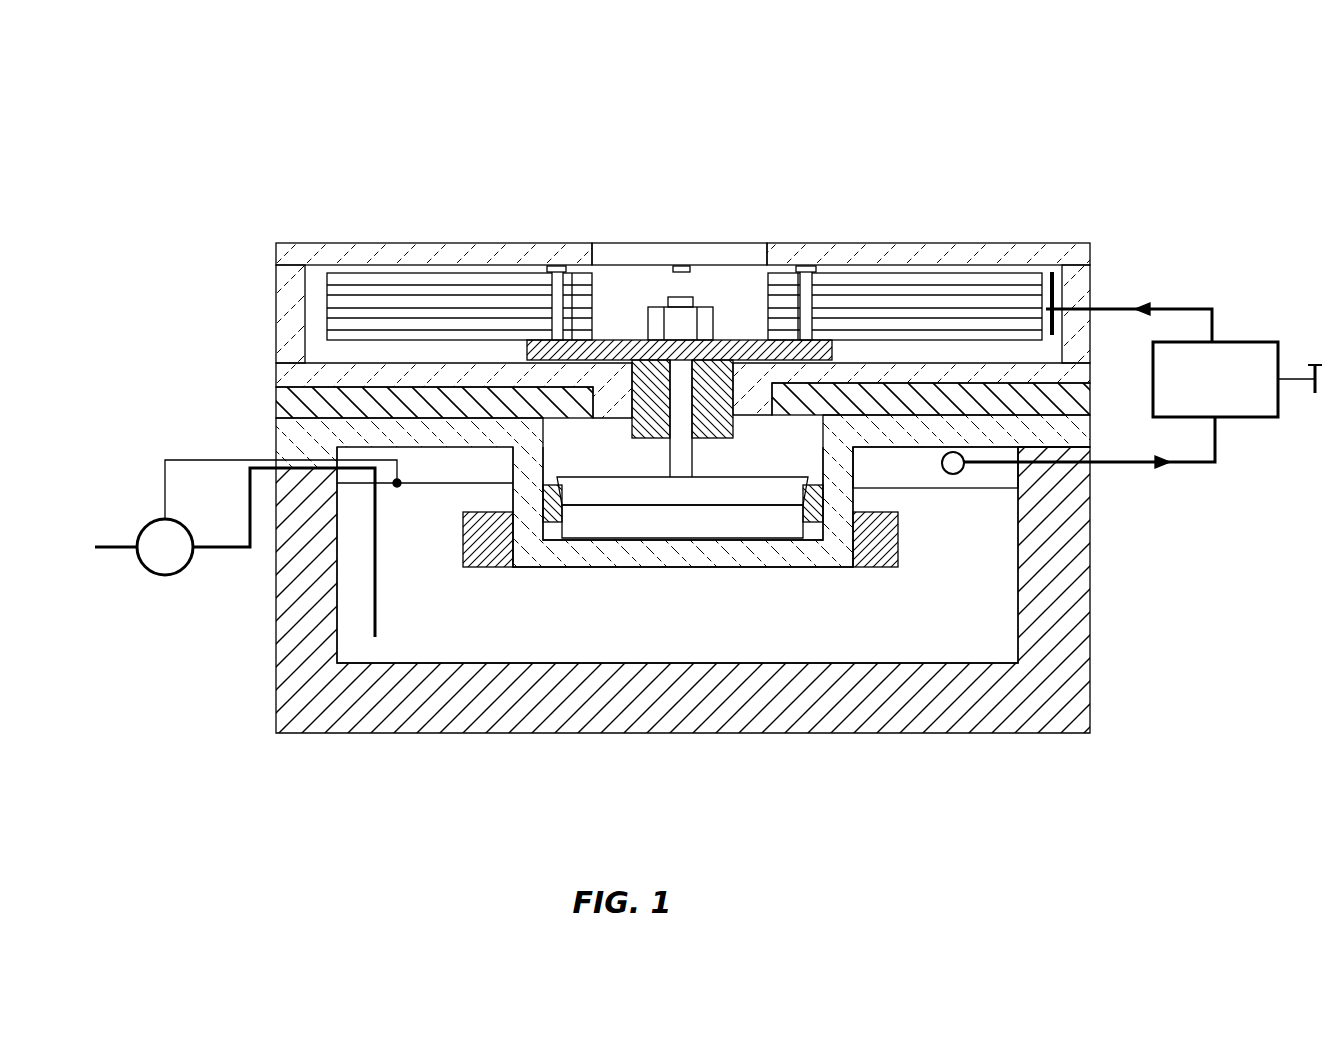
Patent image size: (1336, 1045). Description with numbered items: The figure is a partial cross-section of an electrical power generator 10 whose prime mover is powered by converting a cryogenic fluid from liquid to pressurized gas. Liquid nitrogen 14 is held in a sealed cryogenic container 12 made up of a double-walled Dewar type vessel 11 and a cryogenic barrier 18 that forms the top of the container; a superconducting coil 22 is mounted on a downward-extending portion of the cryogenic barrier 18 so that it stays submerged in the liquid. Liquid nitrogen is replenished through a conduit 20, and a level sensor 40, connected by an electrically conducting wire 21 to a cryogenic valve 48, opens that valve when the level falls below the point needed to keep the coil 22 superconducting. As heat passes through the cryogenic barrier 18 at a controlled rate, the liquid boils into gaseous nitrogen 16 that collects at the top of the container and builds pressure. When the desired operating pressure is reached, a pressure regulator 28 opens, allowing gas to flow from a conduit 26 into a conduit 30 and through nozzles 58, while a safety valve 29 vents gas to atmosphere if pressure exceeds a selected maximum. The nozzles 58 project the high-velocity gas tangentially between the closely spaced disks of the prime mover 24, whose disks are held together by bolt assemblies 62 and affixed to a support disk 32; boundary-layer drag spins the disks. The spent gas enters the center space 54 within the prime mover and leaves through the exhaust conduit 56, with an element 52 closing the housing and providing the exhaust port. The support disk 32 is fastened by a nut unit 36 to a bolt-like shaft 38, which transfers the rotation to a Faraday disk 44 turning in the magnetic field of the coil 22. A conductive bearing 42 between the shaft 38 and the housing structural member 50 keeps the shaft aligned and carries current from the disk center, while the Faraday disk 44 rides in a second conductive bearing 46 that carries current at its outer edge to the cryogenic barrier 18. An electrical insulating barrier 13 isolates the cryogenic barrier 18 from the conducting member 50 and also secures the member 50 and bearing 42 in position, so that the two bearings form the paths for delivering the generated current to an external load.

The electrical power generator 10 is at (1090, 120).
The Dewar type vessel 11 is at (276, 690).
The cryogenic container 12 is at (1090, 712).
The electrical insulating barrier 13 is at (1092, 400).
The liquid nitrogen 14 is at (677, 555).
The gaseous nitrogen 16 is at (935, 467).
The cryogenic barrier 18 is at (1057, 447).
The conduit 20 is at (245, 550).
The electrically conducting wire 21 is at (203, 460).
The superconducting coil 22 is at (880, 567).
The prime mover 24 is at (452, 273).
The conduit 26 is at (1180, 462).
The pressure regulator 28 is at (1247, 342).
The safety valve 29 is at (1320, 367).
The conduit 30 is at (1175, 305).
The support disk 32 is at (575, 273).
The nut unit 36 is at (702, 297).
The shaft 38 is at (698, 440).
The level sensor 40 is at (397, 487).
The bearing 42 is at (733, 400).
The Faraday disk 44 is at (773, 507).
The bearing 46 is at (556, 567).
The cryogenic valve 48 is at (138, 533).
The housing structural member 50 is at (276, 377).
The element closing the housing 52 is at (348, 243).
The center space 54 is at (649, 286).
The exhaust conduit 56 is at (650, 243).
The nozzles 58 is at (1052, 292).
The bolt assemblies 62 is at (557, 266).